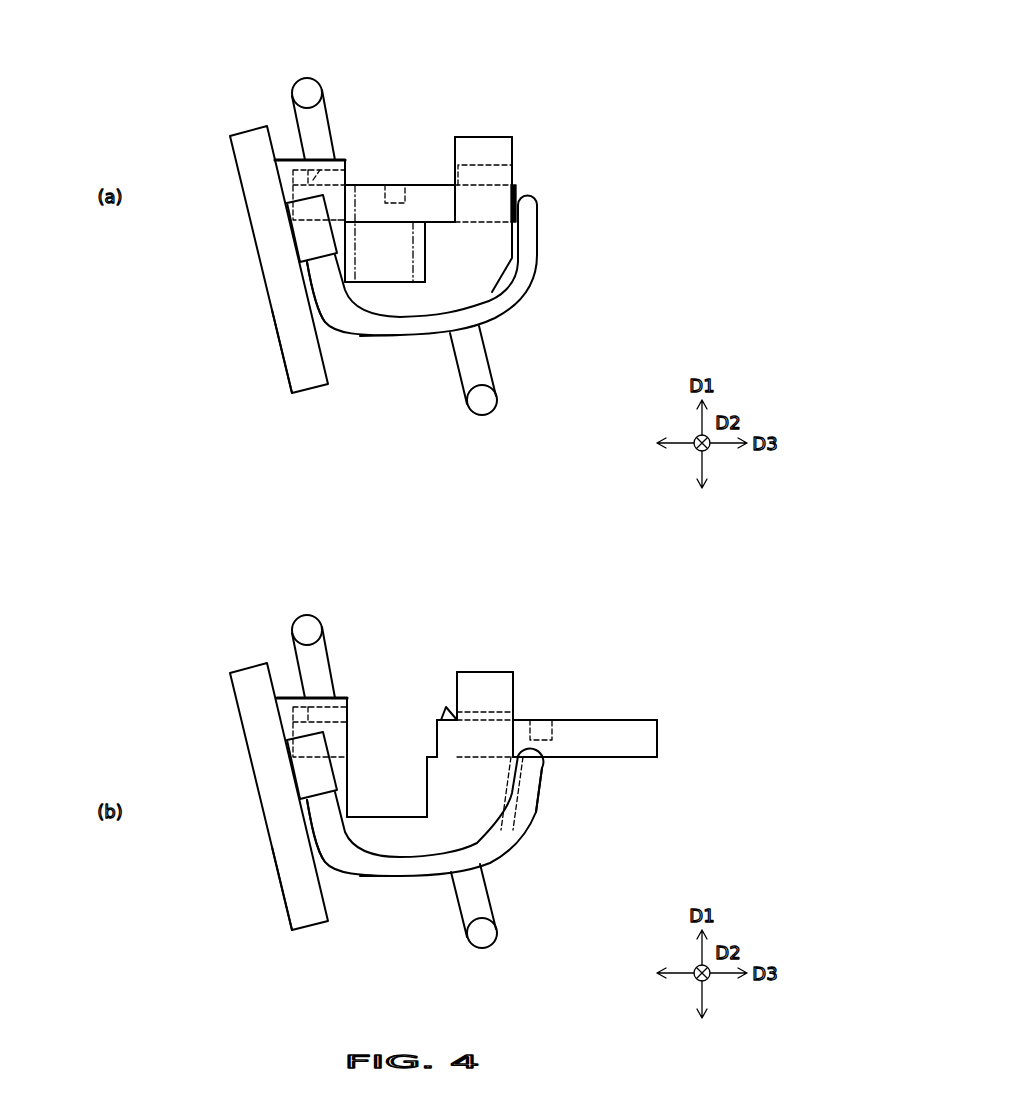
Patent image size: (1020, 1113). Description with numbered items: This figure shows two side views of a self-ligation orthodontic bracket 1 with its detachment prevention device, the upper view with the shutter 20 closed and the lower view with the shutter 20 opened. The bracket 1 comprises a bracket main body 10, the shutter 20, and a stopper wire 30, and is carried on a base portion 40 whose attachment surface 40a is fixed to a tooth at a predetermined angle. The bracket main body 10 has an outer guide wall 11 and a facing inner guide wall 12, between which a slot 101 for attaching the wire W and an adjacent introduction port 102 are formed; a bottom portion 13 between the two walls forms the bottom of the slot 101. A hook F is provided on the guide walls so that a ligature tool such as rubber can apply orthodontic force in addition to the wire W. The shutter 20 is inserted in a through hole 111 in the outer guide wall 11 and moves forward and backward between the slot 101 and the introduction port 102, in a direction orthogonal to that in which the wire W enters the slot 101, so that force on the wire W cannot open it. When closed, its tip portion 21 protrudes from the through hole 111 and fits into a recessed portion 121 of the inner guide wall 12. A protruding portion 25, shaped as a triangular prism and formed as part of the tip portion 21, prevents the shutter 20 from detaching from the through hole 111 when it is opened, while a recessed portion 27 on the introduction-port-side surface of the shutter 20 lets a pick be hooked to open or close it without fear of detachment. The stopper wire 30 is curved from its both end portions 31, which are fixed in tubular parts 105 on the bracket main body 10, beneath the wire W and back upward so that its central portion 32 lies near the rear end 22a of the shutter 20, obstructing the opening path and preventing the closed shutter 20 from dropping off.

The bracket 1 is at (511, 61).
The bracket main body 10 is at (512, 138).
The outer guide wall 11 is at (472, 145).
The inner guide wall 12 is at (290, 165).
The bottom portion 13 is at (407, 312).
The shutter 20 is at (420, 195).
The tip portion 21 is at (340, 172).
The rear end 22a is at (516, 196).
The protruding portion 25 is at (313, 180).
The recessed portion 27 is at (397, 185).
The stopper wire 30 is at (507, 302).
The both end portions 31 is at (322, 290).
The central portion 32 is at (528, 218).
The base portion 40 is at (243, 130).
The attachment surface 40a is at (280, 342).
The slot 101 is at (382, 280).
The introduction port 102 is at (440, 165).
The tubular parts 105 is at (300, 243).
The through hole 111 is at (505, 170).
The recessed portion 121 is at (290, 205).
The hook F is at (307, 92).
The wire W is at (363, 268).